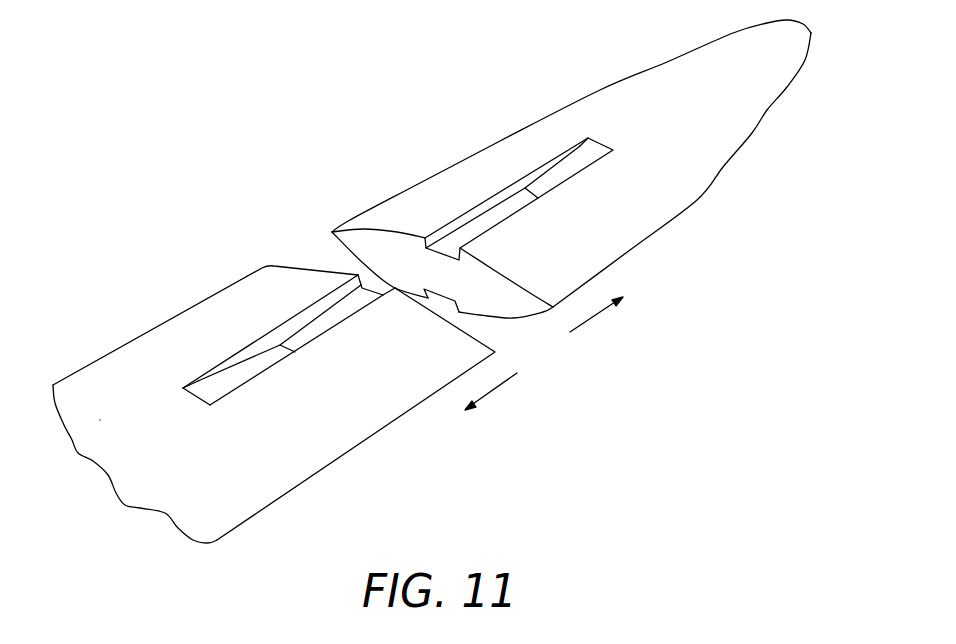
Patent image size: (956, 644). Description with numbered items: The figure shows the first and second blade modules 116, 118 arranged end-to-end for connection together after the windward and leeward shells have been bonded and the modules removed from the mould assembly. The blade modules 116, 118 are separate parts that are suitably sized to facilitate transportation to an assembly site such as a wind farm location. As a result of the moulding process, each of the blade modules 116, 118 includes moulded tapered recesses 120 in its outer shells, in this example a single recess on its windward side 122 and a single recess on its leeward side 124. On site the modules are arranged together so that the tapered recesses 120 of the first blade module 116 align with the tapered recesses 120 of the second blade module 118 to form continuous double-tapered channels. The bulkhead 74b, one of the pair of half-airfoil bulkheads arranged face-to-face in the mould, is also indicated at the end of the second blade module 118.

The bulkhead 74b is at (527, 307).
The second blade module 118 is at (753, 137).
The tapered recesses 120 is at (463, 235).
The first blade module 116 is at (372, 428).
The windward side 122 is at (312, 490).
The leeward side 124 is at (136, 350).